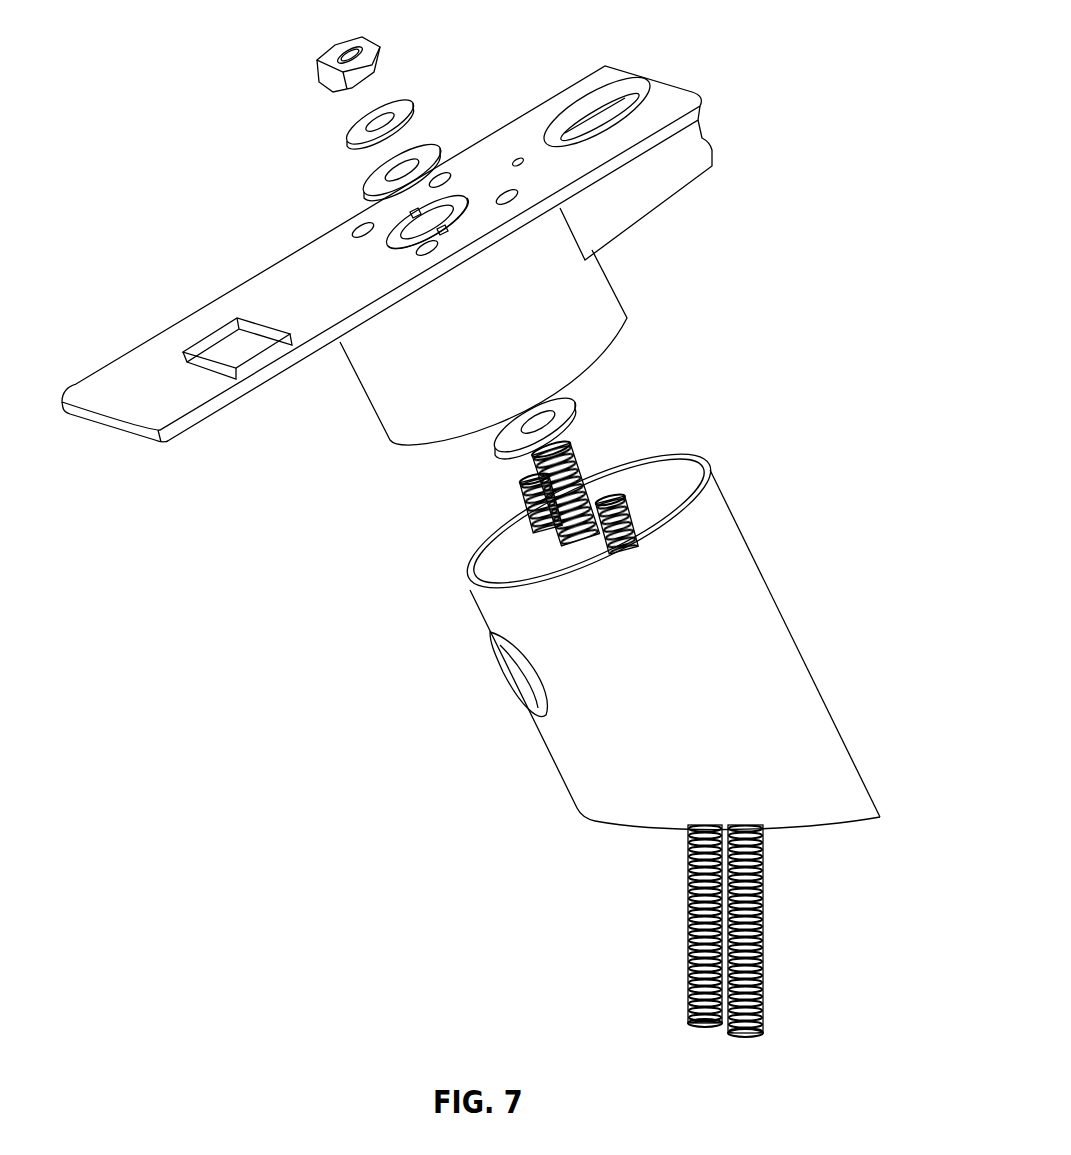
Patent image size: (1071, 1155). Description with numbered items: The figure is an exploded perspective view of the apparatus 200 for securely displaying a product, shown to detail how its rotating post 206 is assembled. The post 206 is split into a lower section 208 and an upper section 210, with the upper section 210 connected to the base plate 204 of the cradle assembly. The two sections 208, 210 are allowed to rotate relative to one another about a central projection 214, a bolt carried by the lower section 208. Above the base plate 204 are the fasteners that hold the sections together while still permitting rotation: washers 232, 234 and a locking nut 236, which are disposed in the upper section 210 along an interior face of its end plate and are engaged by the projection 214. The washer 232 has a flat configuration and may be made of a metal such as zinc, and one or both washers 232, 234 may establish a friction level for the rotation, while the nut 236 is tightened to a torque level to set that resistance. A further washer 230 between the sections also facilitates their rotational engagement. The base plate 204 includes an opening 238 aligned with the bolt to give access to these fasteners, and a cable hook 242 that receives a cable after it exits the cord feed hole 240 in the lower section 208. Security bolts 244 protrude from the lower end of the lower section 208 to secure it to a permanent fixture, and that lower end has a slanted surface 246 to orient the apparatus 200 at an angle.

The apparatus 200 is at (812, 50).
The base plate 204 is at (464, 352).
The post 206 is at (754, 323).
The lower section 208 is at (582, 688).
The upper section 210 is at (363, 399).
The projection 214 is at (572, 455).
The washer 230 is at (486, 449).
The washer 232 is at (346, 144).
The washer 234 is at (360, 192).
The locking nut 236 is at (316, 70).
The opening 238 is at (447, 217).
The cord feed hole 240 is at (510, 679).
The cable hook 242 is at (232, 366).
The security bolts 244 is at (688, 930).
The slanted surface 246 is at (817, 834).